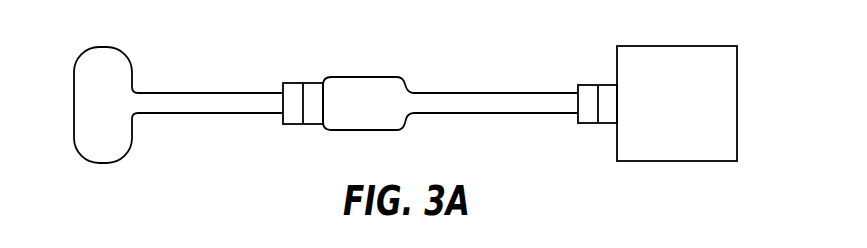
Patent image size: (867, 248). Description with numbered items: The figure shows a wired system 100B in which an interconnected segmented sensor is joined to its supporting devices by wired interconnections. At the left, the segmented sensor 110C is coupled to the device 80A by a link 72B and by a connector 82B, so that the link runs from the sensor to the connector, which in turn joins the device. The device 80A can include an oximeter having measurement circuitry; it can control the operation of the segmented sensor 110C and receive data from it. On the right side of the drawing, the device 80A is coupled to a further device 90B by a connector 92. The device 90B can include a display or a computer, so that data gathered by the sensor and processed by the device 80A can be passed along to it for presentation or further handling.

The segmented sensor 110C is at (102, 45).
The link 72B is at (209, 115).
The connector 82B is at (332, 74).
The device 80A is at (367, 132).
The system 100B is at (410, 62).
The connector 92 is at (625, 81).
The device 90B is at (738, 100).